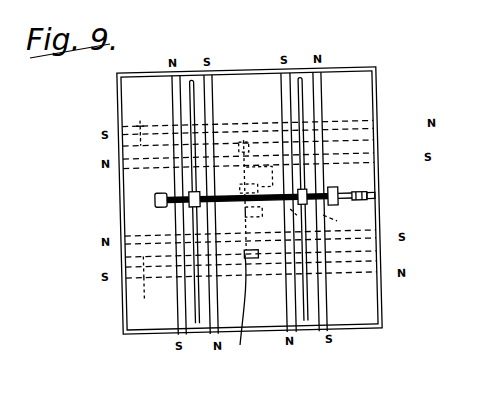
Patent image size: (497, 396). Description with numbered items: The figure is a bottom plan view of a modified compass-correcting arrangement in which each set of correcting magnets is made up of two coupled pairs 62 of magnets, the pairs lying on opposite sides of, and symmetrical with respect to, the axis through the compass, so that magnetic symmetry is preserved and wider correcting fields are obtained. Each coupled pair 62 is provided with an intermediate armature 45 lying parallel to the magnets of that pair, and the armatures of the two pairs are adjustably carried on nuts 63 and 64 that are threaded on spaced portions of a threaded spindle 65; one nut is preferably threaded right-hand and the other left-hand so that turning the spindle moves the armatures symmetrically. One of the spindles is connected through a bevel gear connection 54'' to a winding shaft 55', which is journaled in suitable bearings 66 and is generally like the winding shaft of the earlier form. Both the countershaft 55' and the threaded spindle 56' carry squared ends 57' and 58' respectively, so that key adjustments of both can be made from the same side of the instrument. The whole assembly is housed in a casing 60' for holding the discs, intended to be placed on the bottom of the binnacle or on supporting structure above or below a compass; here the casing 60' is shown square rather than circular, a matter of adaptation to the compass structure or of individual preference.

The armature 45 is at (330, 102).
The bevel gear connection 54'' is at (243, 167).
The winding shaft 55' is at (378, 188).
The threaded spindle 56' is at (249, 311).
The squared end 57' is at (392, 208).
The squared end 58' is at (408, 217).
The casing 60' is at (272, 200).
The pair of magnets 62 is at (373, 159).
The nut 63 is at (190, 200).
The nut 64 is at (303, 190).
The threaded spindle 65 is at (257, 229).
The bearing 66 is at (377, 233).